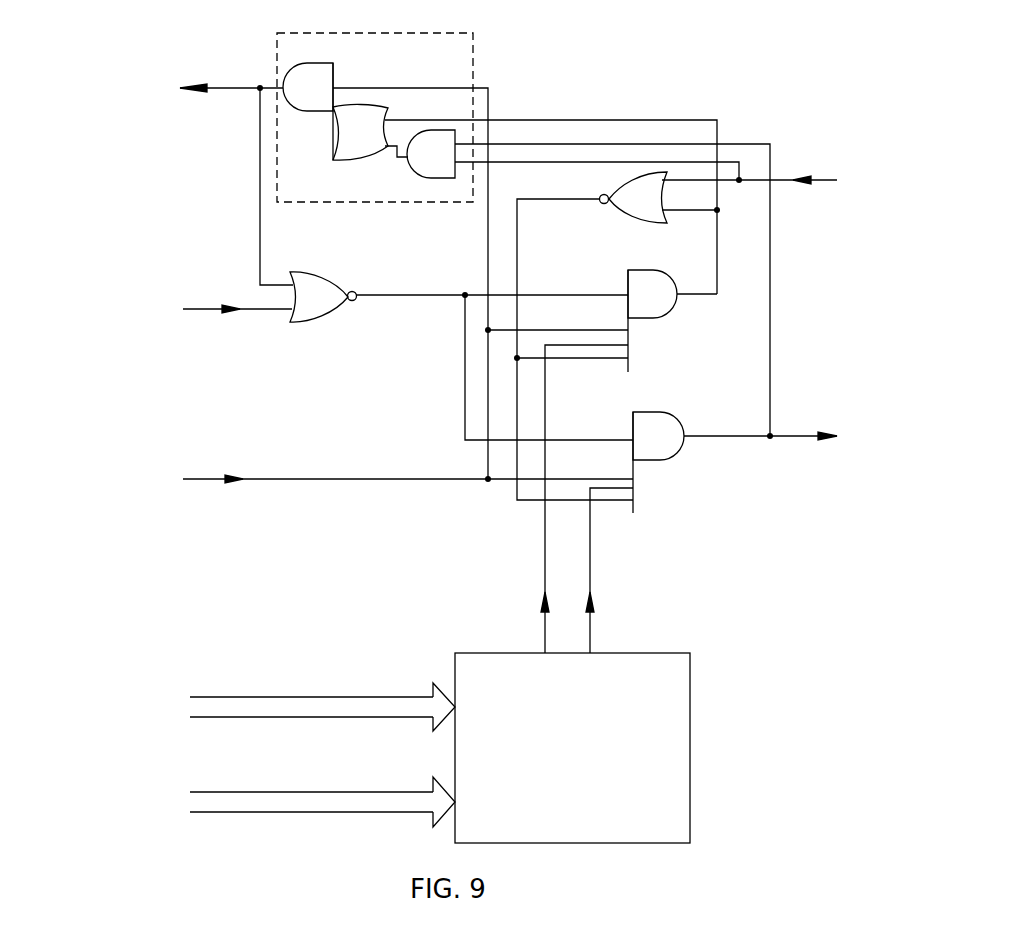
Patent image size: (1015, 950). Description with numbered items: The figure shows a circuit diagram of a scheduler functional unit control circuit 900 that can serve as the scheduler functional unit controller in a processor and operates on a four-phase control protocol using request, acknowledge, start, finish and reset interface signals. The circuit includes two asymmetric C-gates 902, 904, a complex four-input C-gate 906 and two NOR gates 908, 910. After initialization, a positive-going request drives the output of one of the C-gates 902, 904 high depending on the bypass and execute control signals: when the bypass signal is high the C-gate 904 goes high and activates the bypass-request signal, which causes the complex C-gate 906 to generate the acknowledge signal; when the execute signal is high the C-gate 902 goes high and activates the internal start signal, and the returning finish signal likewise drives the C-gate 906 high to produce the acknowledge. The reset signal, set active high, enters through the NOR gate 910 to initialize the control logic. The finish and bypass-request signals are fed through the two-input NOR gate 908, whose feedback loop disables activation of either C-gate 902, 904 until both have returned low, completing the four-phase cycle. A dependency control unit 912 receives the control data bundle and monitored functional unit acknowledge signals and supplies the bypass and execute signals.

The scheduler functional unit control circuit 900 is at (890, 560).
The asymmetric C-gate 902 is at (660, 412).
The asymmetric C-gate 904 is at (653, 319).
The complex 4-input C-gate 906 is at (473, 52).
The NOR gate 908 is at (637, 225).
The NOR gate 910 is at (322, 272).
The dependency control unit 912 is at (690, 743).